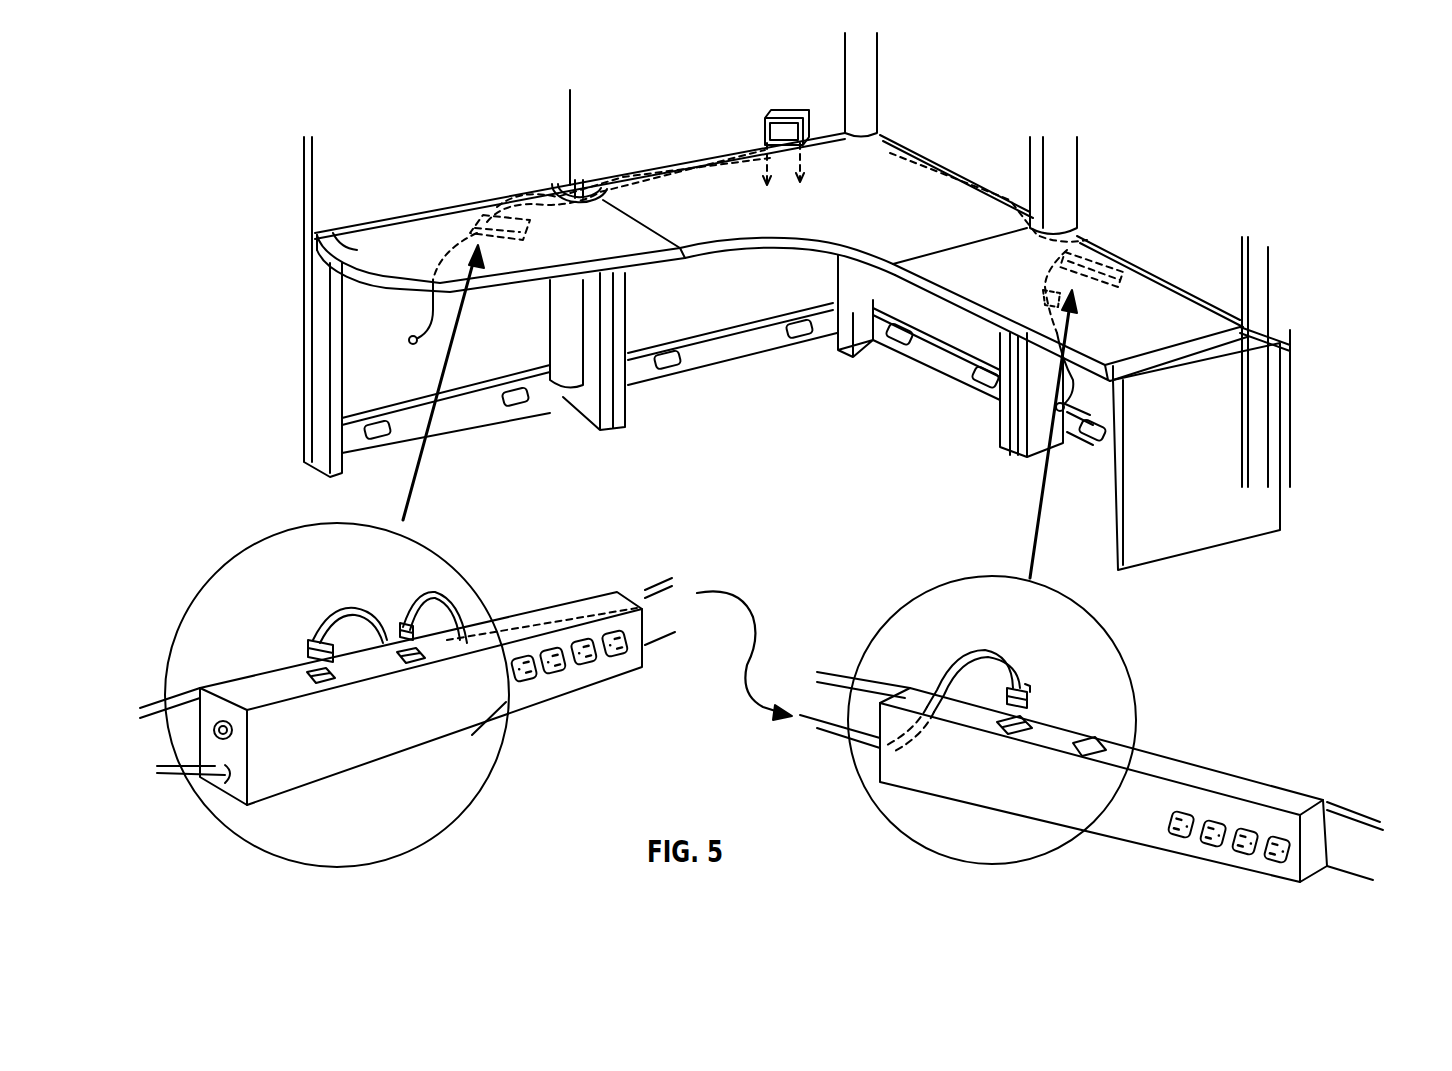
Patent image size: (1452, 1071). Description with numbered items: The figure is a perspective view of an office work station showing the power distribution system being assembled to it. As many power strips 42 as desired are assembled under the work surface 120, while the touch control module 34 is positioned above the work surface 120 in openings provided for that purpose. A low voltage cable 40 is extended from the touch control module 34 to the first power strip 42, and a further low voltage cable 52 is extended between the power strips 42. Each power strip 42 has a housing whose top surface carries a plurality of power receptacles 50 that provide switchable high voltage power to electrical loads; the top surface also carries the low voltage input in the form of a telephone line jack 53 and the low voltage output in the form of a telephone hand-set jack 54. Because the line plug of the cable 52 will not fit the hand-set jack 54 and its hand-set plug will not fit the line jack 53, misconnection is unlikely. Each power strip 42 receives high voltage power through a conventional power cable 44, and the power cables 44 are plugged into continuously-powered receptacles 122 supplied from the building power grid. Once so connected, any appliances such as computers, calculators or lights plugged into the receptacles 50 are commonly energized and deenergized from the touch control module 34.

The touch control module 34 is at (775, 115).
The low voltage cable 40 is at (650, 188).
The power strip 42 is at (470, 225).
The power cable 44 is at (432, 318).
The power receptacles 50 is at (610, 660).
The low voltage cable 52 is at (905, 150).
The telephone line jack 53 is at (312, 672).
The telephone hand-set jack 54 is at (422, 662).
The work surface 120 is at (940, 193).
The continuously-powered receptacles 122 is at (518, 402).